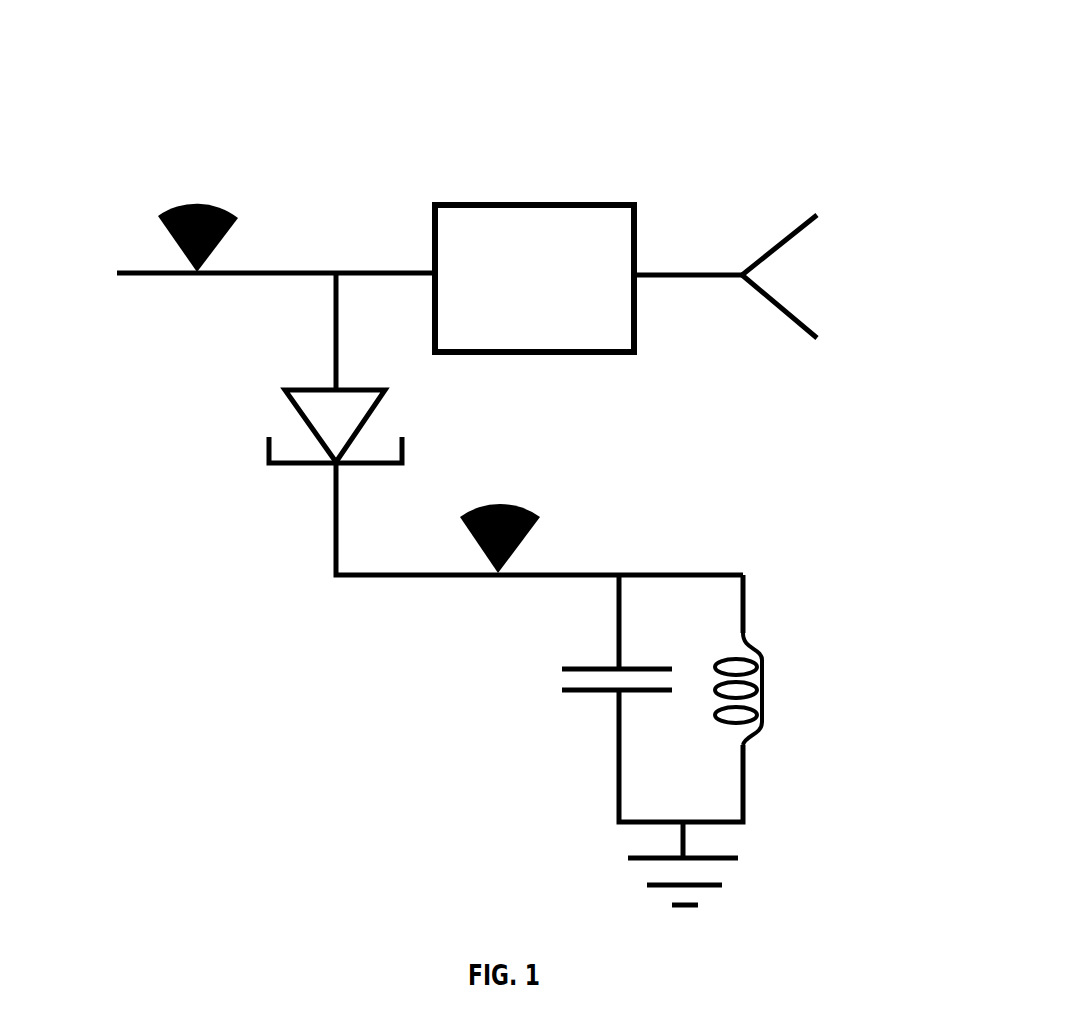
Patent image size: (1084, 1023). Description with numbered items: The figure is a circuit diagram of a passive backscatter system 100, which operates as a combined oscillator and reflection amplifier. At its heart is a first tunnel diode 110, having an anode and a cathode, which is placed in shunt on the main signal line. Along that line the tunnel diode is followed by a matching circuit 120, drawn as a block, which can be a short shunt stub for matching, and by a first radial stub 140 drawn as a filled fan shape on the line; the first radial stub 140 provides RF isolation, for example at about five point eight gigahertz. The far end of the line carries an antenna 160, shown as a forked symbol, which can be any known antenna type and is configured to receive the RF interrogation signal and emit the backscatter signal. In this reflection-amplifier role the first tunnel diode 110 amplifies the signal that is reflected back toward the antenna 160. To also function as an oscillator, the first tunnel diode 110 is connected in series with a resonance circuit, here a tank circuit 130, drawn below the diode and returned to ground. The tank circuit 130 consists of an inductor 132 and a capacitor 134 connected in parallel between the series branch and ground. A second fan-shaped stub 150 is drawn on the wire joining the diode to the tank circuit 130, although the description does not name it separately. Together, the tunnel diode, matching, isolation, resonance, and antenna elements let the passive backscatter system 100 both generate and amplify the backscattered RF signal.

The passive backscatter system 100 is at (250, 46).
The first tunnel diode 110 is at (307, 390).
The matching circuit 120 is at (545, 202).
The tank circuit 130 is at (797, 807).
The inductor 132 is at (760, 687).
The capacitor 134 is at (560, 668).
The first radial stub 140 is at (193, 207).
The second RF coupler / probe 150 is at (527, 510).
The antenna 160 is at (800, 223).